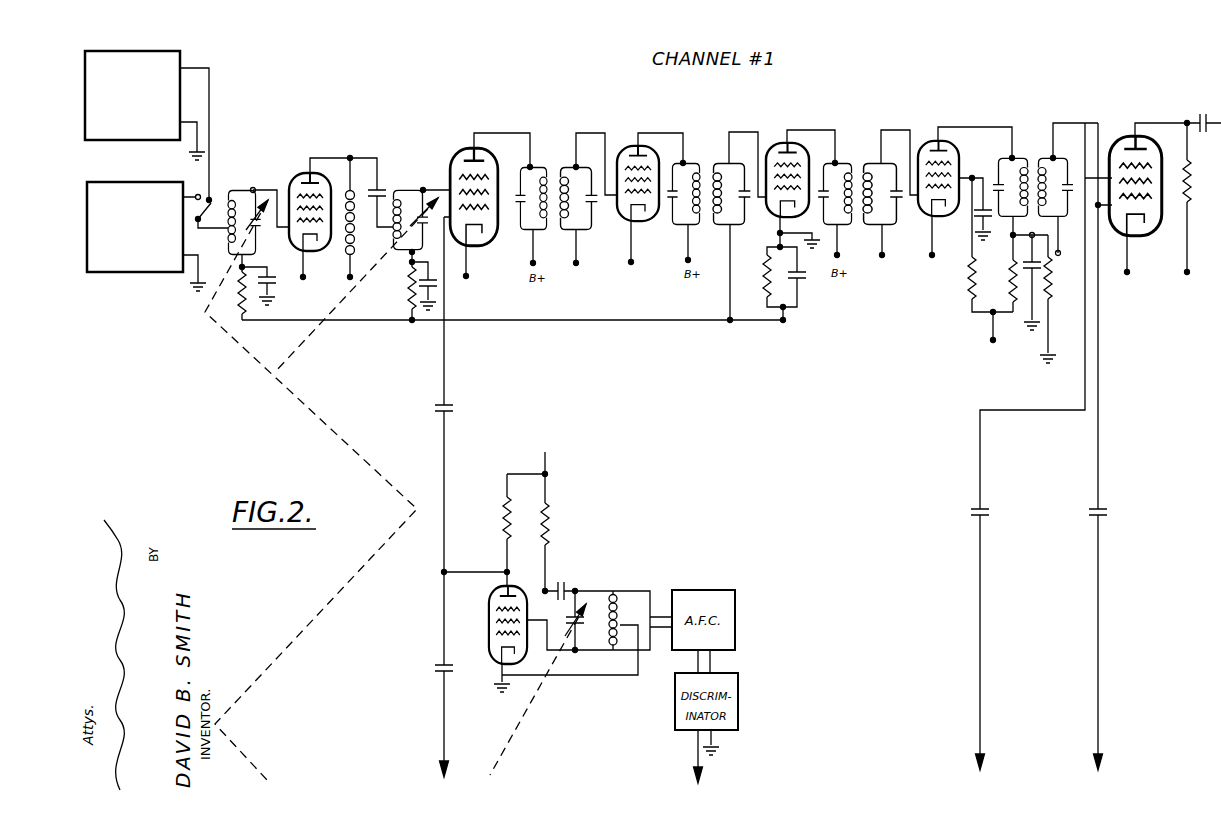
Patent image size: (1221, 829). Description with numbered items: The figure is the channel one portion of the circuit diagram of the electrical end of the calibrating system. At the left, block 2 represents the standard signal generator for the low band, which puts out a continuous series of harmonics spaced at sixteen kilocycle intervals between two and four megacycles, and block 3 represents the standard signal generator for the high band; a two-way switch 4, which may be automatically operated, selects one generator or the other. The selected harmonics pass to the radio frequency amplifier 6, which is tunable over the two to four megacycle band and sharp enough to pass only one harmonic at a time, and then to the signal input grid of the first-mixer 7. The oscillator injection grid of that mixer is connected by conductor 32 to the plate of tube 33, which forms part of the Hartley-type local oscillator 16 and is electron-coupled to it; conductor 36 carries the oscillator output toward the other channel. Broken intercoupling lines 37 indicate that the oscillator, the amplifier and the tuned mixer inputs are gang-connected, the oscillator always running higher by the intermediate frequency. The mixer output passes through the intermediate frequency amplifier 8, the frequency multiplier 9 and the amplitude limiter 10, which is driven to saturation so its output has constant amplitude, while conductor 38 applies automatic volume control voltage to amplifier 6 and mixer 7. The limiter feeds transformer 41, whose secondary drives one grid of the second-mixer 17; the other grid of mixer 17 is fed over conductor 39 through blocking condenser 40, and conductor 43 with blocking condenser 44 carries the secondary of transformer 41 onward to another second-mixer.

The standard signal generator for the low band 2 is at (128, 52).
The standard signal generator for the high band 3 is at (147, 273).
The two-way switch 4 is at (212, 195).
The radio frequency amplifier 6 is at (316, 156).
The first-mixer 7 is at (472, 127).
The intermediate frequency amplifier 8 is at (643, 120).
The frequency multiplier 9 is at (798, 125).
The amplitude limiter 10 is at (948, 123).
The local oscillator 16 is at (617, 563).
The second-mixer 17 is at (1142, 123).
The conductor 32 is at (448, 468).
The tube 33 is at (506, 592).
The conductor 36 is at (447, 632).
The broken intercoupling lines 37 is at (300, 628).
The conductor 38 is at (580, 322).
The conductor 39 is at (980, 468).
The blocking condenser 40 is at (991, 513).
The transformer 41 is at (1031, 168).
The conductor 43 is at (1100, 458).
The blocking condenser 44 is at (1108, 524).